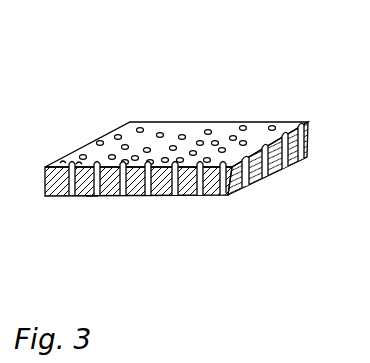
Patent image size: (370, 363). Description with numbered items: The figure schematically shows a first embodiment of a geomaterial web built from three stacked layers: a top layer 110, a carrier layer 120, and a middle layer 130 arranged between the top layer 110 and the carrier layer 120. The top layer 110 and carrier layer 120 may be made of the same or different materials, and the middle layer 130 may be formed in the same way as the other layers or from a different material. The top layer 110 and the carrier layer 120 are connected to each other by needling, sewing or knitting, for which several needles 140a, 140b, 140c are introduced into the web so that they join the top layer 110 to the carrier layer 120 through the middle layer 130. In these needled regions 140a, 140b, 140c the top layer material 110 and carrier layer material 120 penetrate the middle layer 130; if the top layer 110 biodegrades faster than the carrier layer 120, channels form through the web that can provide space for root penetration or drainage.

The top layer 110 is at (175, 132).
The carrier layer 120 is at (183, 203).
The middle layer 130 is at (160, 197).
The needle 140a is at (62, 166).
The needle 140b is at (92, 197).
The needle 140c is at (77, 163).